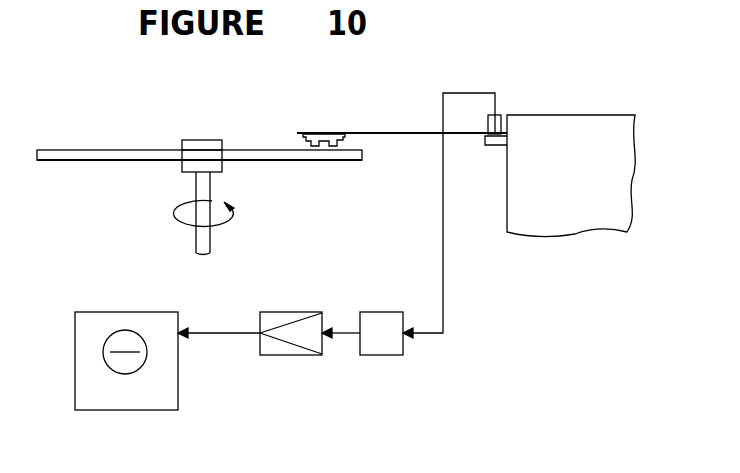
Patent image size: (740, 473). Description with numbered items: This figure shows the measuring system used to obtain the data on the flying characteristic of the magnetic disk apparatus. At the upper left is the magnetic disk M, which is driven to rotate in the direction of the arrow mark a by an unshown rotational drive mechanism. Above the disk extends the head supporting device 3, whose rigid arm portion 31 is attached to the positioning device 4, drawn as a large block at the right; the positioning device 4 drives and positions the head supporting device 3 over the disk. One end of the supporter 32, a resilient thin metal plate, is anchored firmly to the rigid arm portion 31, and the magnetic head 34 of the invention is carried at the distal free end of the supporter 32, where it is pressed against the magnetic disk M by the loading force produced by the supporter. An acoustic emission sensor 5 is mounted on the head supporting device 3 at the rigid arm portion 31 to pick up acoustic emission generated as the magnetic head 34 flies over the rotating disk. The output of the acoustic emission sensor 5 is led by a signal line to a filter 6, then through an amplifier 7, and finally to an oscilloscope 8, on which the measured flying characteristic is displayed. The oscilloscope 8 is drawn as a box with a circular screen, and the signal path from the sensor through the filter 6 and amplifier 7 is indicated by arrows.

The magnetic disk M is at (104, 150).
The arrow mark a is at (206, 213).
The head supporting device 3 is at (377, 128).
The supporter 32 is at (394, 137).
The magnetic head 34 is at (347, 147).
The rigid arm portion 31 is at (492, 146).
The acoustic emission sensor 5 is at (497, 120).
The positioning device 4 is at (558, 132).
The filter 6 is at (380, 328).
The amplifier 7 is at (276, 322).
The oscilloscope 8 is at (120, 412).